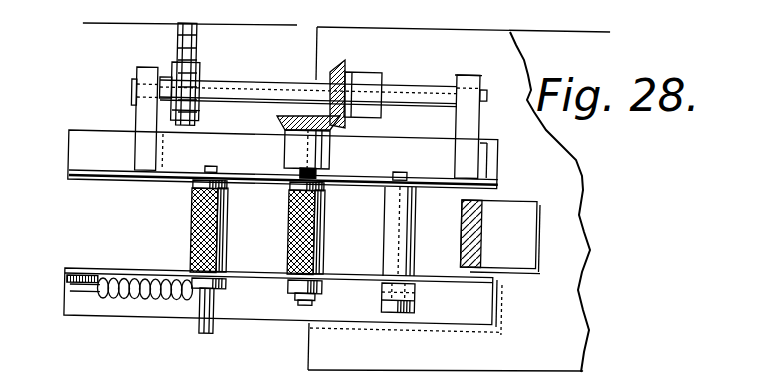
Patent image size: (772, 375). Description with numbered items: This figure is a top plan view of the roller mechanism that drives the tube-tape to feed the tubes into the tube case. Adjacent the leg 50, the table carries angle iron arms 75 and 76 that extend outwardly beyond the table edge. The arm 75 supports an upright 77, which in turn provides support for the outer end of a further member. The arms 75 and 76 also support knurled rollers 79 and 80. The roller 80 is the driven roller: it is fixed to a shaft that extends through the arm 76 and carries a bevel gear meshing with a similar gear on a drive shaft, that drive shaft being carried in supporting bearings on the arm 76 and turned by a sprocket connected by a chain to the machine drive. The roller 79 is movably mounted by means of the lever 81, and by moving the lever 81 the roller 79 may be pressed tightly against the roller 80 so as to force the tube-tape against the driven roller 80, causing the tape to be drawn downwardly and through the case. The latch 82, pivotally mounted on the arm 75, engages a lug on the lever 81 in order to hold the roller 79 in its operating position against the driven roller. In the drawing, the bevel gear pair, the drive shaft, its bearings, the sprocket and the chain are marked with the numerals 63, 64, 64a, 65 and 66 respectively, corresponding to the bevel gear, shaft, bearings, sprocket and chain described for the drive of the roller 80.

The leg 50 is at (520, 208).
The bevel gears 63 is at (328, 152).
The shaft 64 is at (423, 85).
The bearing 64a is at (493, 124).
The sprocket 65 is at (175, 62).
The chain 66 is at (197, 42).
The angle iron arm 75 is at (487, 307).
The angle iron arm 76 is at (75, 150).
The upright 77 is at (67, 283).
The knurled roller 79 is at (228, 228).
The knurled roller 80 is at (327, 234).
The lever 81 is at (225, 287).
The latch 82 is at (418, 290).